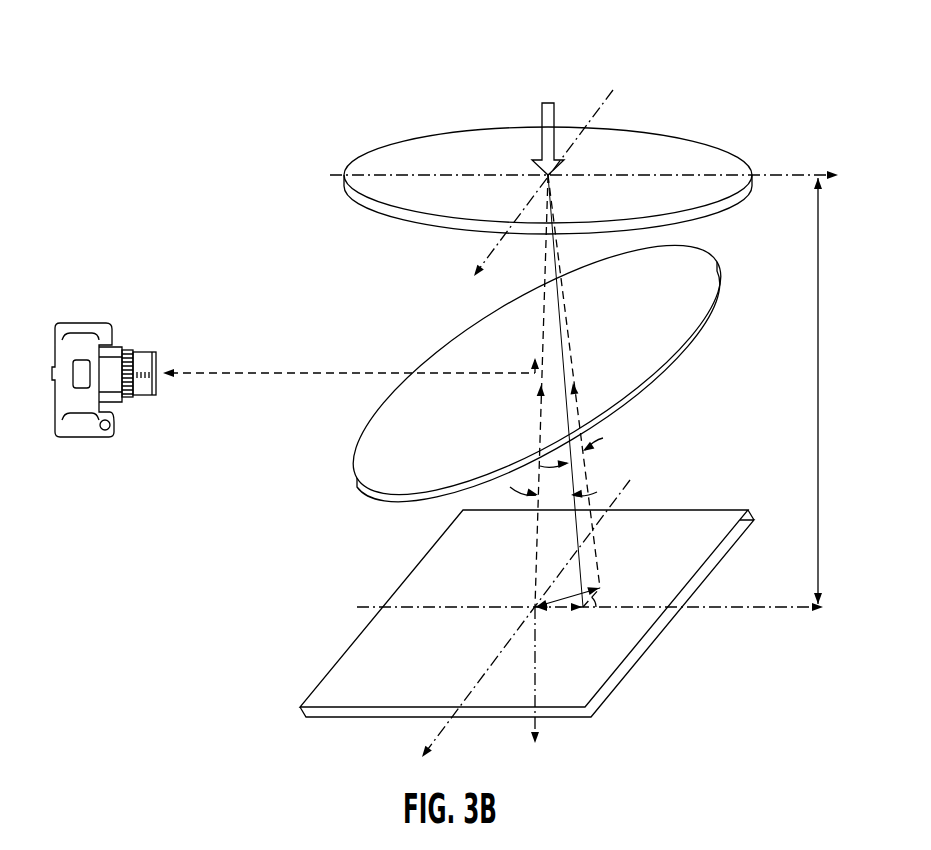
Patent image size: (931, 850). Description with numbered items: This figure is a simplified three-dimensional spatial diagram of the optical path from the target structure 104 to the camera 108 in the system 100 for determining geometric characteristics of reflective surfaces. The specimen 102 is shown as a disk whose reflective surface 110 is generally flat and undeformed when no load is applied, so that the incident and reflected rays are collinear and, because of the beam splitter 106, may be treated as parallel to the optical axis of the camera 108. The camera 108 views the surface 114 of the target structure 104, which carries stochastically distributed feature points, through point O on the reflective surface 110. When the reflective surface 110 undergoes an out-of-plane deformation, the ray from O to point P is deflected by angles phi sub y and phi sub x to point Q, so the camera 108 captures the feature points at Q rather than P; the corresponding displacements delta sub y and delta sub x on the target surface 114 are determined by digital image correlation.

The system 100 is at (228, 110).
The specimen 102 is at (405, 142).
The target structure 104 is at (688, 503).
The beam splitter 106 is at (457, 358).
The camera 108 is at (80, 323).
The reflective surface 110 is at (719, 212).
The surface of the target structure 114 is at (412, 590).